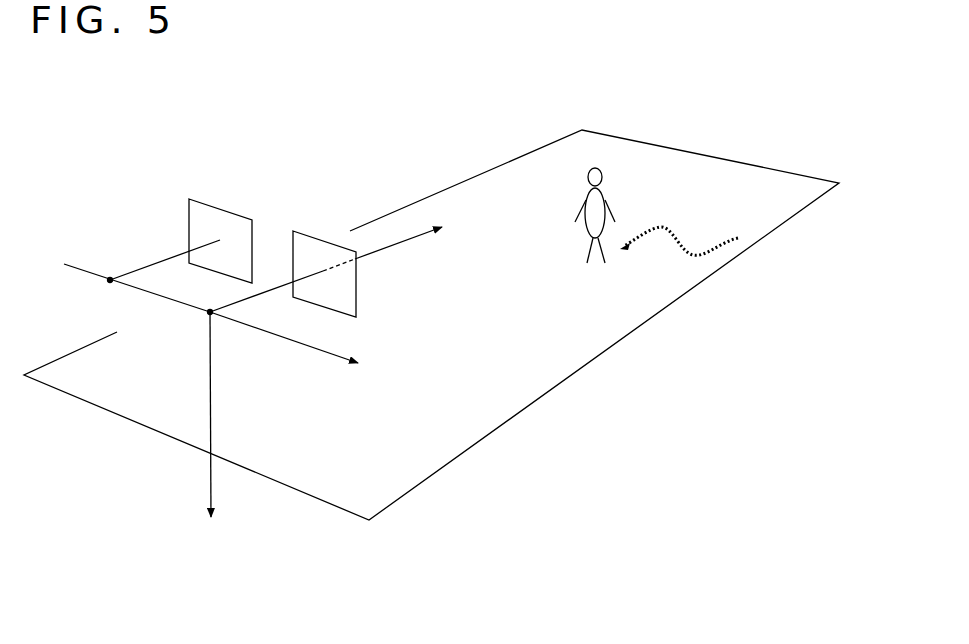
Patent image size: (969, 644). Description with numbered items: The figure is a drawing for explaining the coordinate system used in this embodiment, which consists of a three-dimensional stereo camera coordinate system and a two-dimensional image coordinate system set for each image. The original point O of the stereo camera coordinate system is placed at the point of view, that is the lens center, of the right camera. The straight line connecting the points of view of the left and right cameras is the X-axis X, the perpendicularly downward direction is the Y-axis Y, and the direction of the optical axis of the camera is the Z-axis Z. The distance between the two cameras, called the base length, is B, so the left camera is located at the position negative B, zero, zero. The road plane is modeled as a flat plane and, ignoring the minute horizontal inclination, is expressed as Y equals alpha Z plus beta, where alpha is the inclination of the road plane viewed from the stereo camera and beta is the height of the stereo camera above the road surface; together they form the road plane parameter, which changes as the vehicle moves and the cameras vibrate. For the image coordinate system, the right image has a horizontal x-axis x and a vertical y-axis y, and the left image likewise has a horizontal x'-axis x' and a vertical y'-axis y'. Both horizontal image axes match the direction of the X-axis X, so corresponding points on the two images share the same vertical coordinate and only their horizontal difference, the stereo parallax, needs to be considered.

The base length B is at (207, 314).
The original point O is at (222, 334).
The X-axis X is at (296, 347).
The Y-axis Y is at (202, 425).
The Z-axis Z is at (339, 267).
The x-axis x is at (330, 274).
The y-axis y is at (328, 282).
The x'-axis x' is at (193, 241).
The y'-axis y' is at (206, 244).